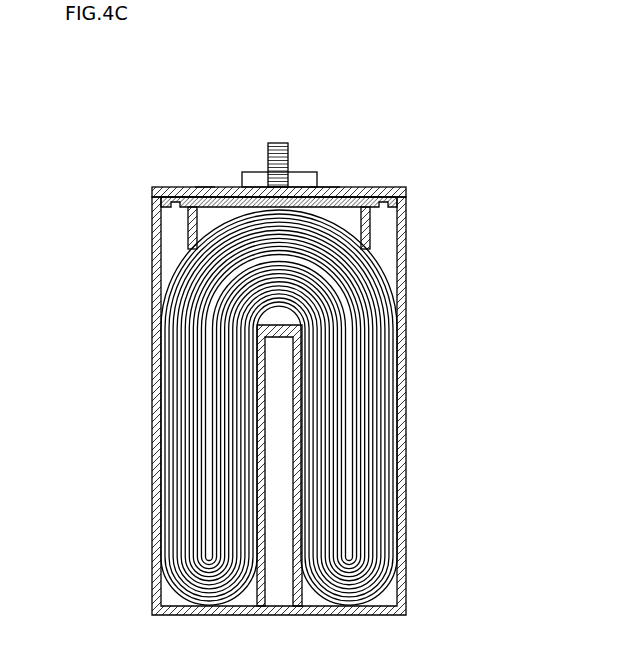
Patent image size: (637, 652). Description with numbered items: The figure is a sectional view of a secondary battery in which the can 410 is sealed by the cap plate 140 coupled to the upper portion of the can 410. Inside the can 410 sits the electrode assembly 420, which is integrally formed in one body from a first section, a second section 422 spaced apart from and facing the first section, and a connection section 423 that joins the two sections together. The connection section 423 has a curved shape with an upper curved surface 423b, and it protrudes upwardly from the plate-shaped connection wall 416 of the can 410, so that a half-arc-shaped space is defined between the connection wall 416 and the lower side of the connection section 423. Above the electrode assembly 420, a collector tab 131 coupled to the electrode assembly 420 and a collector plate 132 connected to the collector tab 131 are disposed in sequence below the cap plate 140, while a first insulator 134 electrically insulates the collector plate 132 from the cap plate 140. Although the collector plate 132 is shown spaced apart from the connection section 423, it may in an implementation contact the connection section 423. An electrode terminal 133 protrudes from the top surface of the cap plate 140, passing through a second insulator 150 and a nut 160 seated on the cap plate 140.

The can 410 is at (409, 449).
The connection wall 416 is at (281, 338).
The electrode assembly 420 is at (323, 407).
The second section 422 is at (290, 295).
The connection section 423 is at (300, 227).
The upper curved surface 423b is at (288, 261).
The collector tab 131 is at (190, 222).
The collector plate 132 is at (157, 188).
The electrode terminal 133 is at (272, 143).
The first insulator 134 is at (167, 205).
The cap plate 140 is at (205, 186).
The second insulator 150 is at (320, 187).
The nut 160 is at (300, 173).